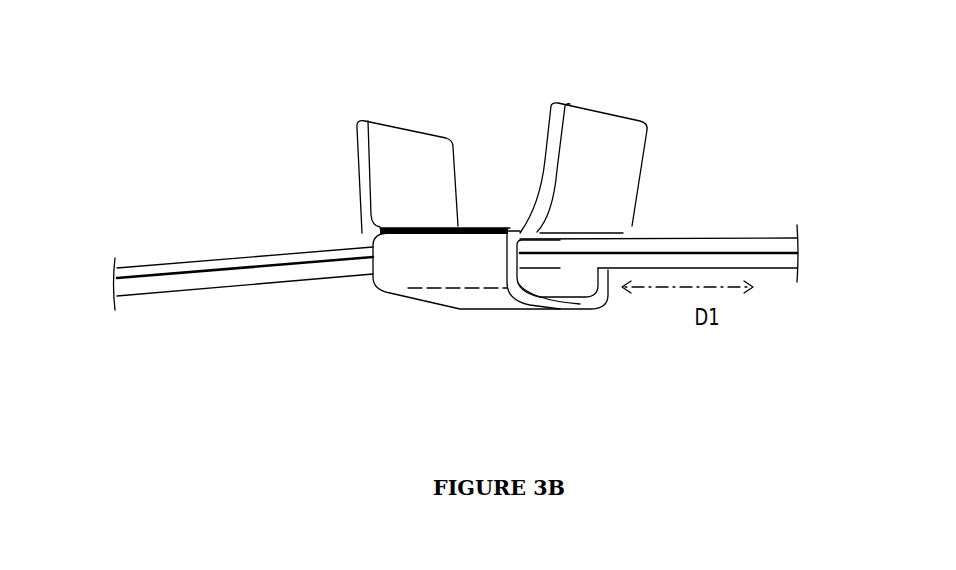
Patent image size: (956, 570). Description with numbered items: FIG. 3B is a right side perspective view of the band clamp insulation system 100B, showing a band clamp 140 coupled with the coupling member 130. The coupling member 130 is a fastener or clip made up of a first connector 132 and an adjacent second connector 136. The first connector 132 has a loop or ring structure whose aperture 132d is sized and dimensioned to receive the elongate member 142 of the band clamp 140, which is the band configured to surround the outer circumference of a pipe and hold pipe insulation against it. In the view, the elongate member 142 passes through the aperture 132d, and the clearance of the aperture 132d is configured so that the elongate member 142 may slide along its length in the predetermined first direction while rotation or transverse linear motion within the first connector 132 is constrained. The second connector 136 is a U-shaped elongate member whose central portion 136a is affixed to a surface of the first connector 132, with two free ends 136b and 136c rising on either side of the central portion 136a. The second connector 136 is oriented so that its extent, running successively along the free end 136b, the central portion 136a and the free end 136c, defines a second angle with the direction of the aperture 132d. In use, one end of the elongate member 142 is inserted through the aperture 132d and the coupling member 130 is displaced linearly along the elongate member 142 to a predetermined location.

The band clamp insulation system 100B is at (786, 144).
The coupling member 130 is at (479, 211).
The first connector 132 is at (423, 270).
The aperture 132d is at (552, 272).
The second connector 136 is at (479, 118).
The central portion 136a is at (480, 228).
The free end 136b is at (402, 143).
The free end 136c is at (610, 123).
The band clamp 140 is at (456, 284).
The elongate member 142 is at (216, 281).